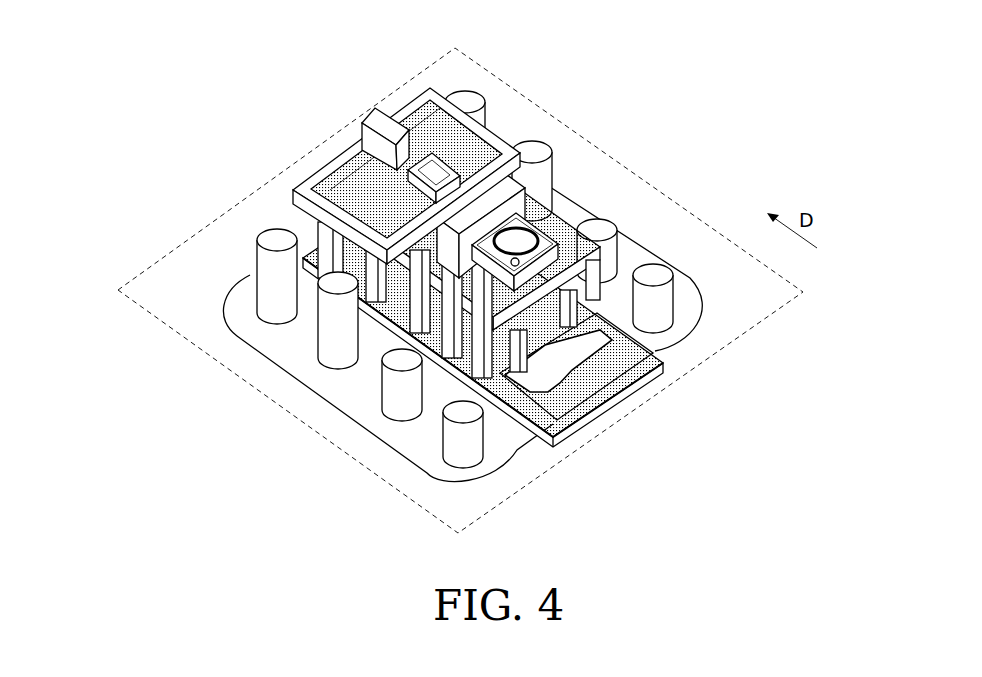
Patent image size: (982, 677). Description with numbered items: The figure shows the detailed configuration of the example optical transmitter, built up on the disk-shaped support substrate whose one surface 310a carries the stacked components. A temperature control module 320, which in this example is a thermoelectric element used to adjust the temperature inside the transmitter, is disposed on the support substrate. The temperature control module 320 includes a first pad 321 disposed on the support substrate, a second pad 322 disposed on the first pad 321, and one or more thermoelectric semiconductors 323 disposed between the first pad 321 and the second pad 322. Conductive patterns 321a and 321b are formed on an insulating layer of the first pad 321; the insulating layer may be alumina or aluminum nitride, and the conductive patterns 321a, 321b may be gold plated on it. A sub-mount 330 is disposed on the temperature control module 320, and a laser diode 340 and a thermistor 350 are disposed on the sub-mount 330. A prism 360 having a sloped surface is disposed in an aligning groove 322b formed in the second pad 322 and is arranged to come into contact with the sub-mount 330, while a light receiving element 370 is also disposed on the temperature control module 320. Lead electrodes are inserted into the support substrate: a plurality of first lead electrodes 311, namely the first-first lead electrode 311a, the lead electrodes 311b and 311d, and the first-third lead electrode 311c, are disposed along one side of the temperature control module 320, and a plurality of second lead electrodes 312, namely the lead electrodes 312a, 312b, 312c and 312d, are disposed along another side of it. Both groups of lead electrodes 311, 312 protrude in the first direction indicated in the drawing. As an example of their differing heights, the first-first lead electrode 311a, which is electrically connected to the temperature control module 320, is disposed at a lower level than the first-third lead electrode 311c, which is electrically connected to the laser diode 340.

The one surface 310a is at (735, 320).
The first lead electrodes 311 is at (130, 393).
The first-first lead electrode 311a is at (463, 448).
The first lead electrode 311b is at (398, 400).
The first-third lead electrode 311c is at (330, 345).
The first lead electrode 311d is at (267, 303).
The second lead electrodes 312 is at (537, 7).
The second lead electrode 312a is at (655, 272).
The second lead electrode 312b is at (598, 230).
The second lead electrode 312c is at (533, 150).
The second lead electrode 312d is at (470, 100).
The temperature control module 320 is at (668, 362).
The first pad 321 is at (613, 400).
The conductive pattern 321a is at (640, 367).
The conductive pattern 321b is at (627, 390).
The second pad 322 is at (597, 392).
The aligning groove 322b is at (303, 255).
The thermoelectric semiconductors 323 is at (540, 417).
The sub-mount 330 is at (322, 165).
The laser diode 340 is at (406, 122).
The thermistor 350 is at (363, 118).
The prism 360 is at (300, 178).
The light receiving element 370 is at (537, 440).